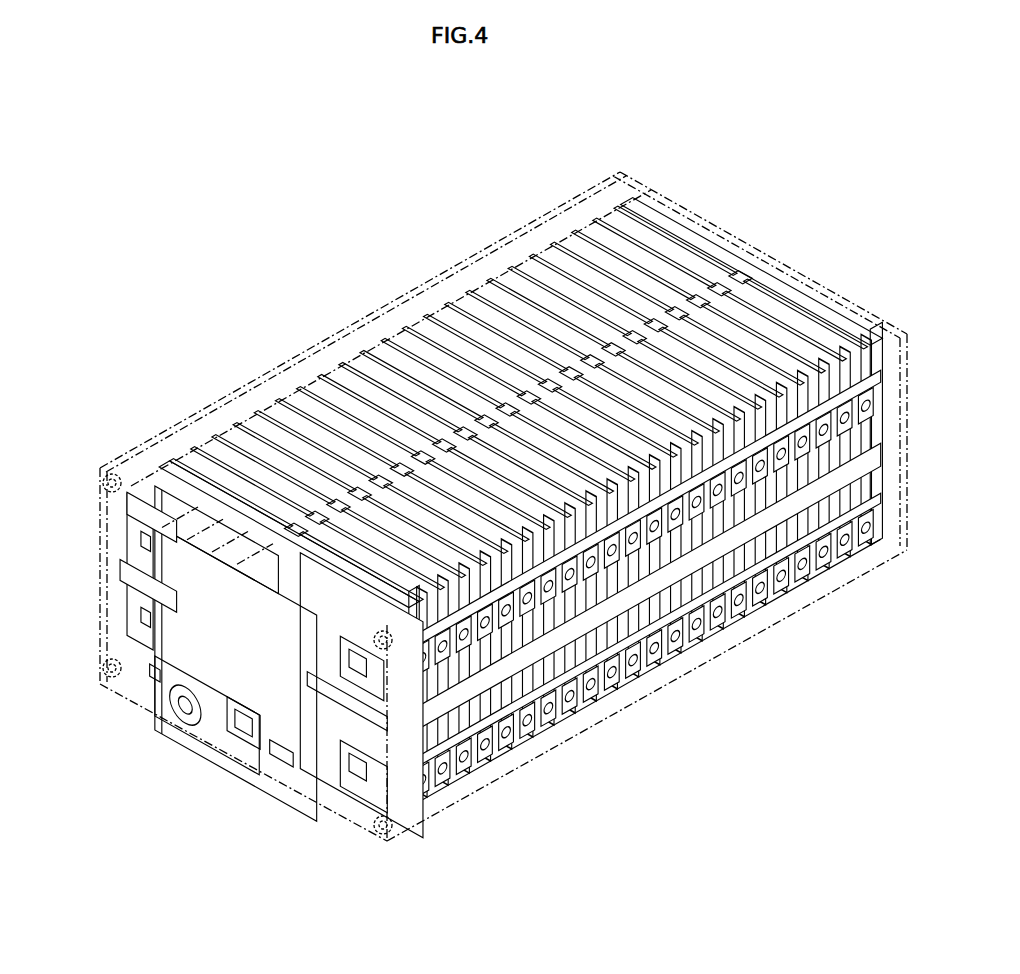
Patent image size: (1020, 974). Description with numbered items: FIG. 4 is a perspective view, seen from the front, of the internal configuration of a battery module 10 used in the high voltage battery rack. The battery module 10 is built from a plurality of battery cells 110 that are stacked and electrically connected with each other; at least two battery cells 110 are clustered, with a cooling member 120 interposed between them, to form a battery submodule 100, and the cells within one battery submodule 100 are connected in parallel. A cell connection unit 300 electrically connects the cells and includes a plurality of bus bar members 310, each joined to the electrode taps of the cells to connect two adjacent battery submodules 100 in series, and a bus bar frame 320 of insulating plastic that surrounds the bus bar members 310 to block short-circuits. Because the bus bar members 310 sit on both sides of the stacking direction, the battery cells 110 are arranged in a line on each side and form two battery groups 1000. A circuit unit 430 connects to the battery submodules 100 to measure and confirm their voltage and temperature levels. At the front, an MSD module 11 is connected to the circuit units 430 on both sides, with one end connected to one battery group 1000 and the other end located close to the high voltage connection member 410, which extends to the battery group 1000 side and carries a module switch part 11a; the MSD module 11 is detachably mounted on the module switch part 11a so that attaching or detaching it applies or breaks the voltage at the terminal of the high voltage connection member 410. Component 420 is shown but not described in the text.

The battery module 10 is at (76, 110).
The MSD module 11 is at (192, 733).
The module switch part 11a is at (152, 672).
The battery submodule 100 is at (469, 913).
The battery cell 110 is at (432, 690).
The cooling member 120 is at (385, 750).
The cell connection unit 300 is at (657, 813).
The bus bar member 310 is at (510, 730).
The bus bar frame 320 is at (517, 733).
The high voltage connection member 410 is at (320, 748).
The connector 420 is at (232, 735).
The circuit unit 430 is at (680, 557).
The battery group 1000 is at (706, 213).